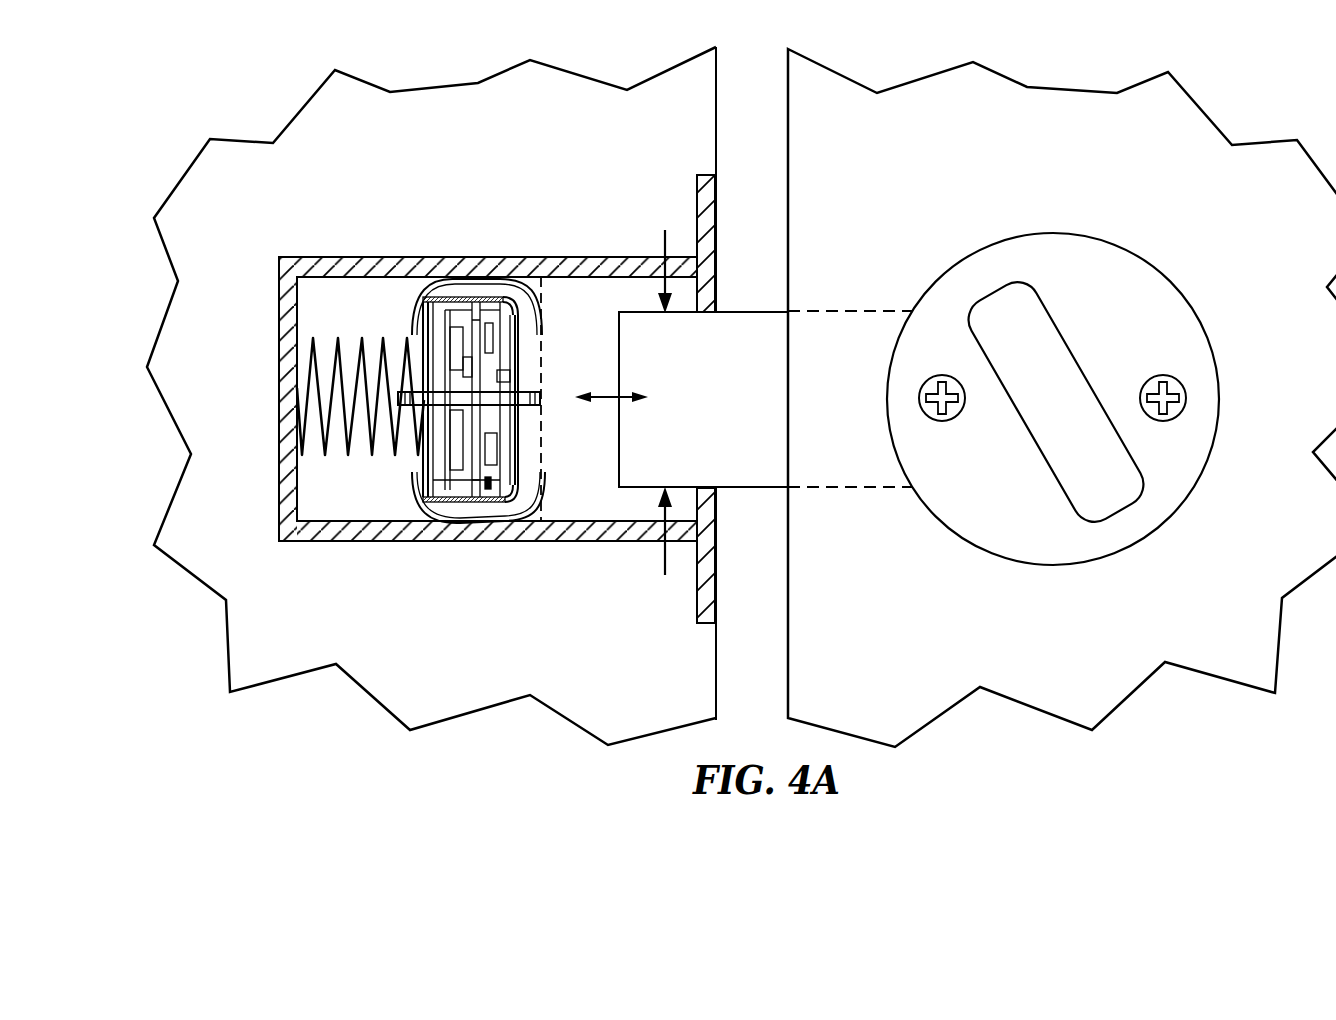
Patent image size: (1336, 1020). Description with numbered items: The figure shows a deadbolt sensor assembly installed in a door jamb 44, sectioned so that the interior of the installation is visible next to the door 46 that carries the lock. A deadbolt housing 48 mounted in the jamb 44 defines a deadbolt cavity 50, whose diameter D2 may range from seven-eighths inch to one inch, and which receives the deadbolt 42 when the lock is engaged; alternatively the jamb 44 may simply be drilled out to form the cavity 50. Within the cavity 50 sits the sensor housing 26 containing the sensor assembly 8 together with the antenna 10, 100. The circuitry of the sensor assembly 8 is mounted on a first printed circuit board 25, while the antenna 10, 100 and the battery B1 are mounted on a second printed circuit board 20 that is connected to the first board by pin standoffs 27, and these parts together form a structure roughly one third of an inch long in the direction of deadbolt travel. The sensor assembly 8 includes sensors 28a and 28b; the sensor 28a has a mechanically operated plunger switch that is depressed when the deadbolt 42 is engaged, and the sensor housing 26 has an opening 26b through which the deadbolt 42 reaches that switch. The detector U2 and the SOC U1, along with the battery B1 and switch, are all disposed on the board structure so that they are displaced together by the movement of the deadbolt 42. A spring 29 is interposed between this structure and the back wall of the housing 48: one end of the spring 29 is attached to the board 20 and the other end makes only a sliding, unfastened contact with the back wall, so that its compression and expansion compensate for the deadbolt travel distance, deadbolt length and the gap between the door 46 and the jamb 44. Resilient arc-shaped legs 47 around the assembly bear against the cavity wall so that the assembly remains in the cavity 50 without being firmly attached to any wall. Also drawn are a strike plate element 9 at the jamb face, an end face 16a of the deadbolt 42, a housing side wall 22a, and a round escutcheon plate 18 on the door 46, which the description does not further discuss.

The door jamb 44 is at (587, 97).
The door 46 is at (1057, 108).
The strike plate 9 is at (708, 193).
The deadbolt 42 is at (750, 310).
The bolt end face 16a is at (616, 418).
The diameter of cavity D2 is at (636, 395).
The escutcheon plate 18 is at (1197, 305).
The deadbolt housing 48 is at (332, 257).
The housing side wall 22a is at (278, 340).
The sensor assembly 8 is at (600, 297).
The deadbolt cavity 50 is at (580, 492).
The spring 29 is at (340, 338).
The second printed circuit board 20 is at (450, 440).
The antenna 10 is at (481, 462).
The antenna 100 is at (460, 480).
The pin standoffs 27 is at (460, 310).
The resilient legs 47 is at (498, 523).
The battery B1 is at (455, 463).
The sensor housing 26 is at (440, 307).
The opening 26b is at (537, 470).
The SOC U1 is at (467, 310).
The detector U2 is at (493, 313).
The first printed circuit board 25 is at (480, 323).
The sensor 28a is at (503, 380).
The sensor 28b is at (503, 450).